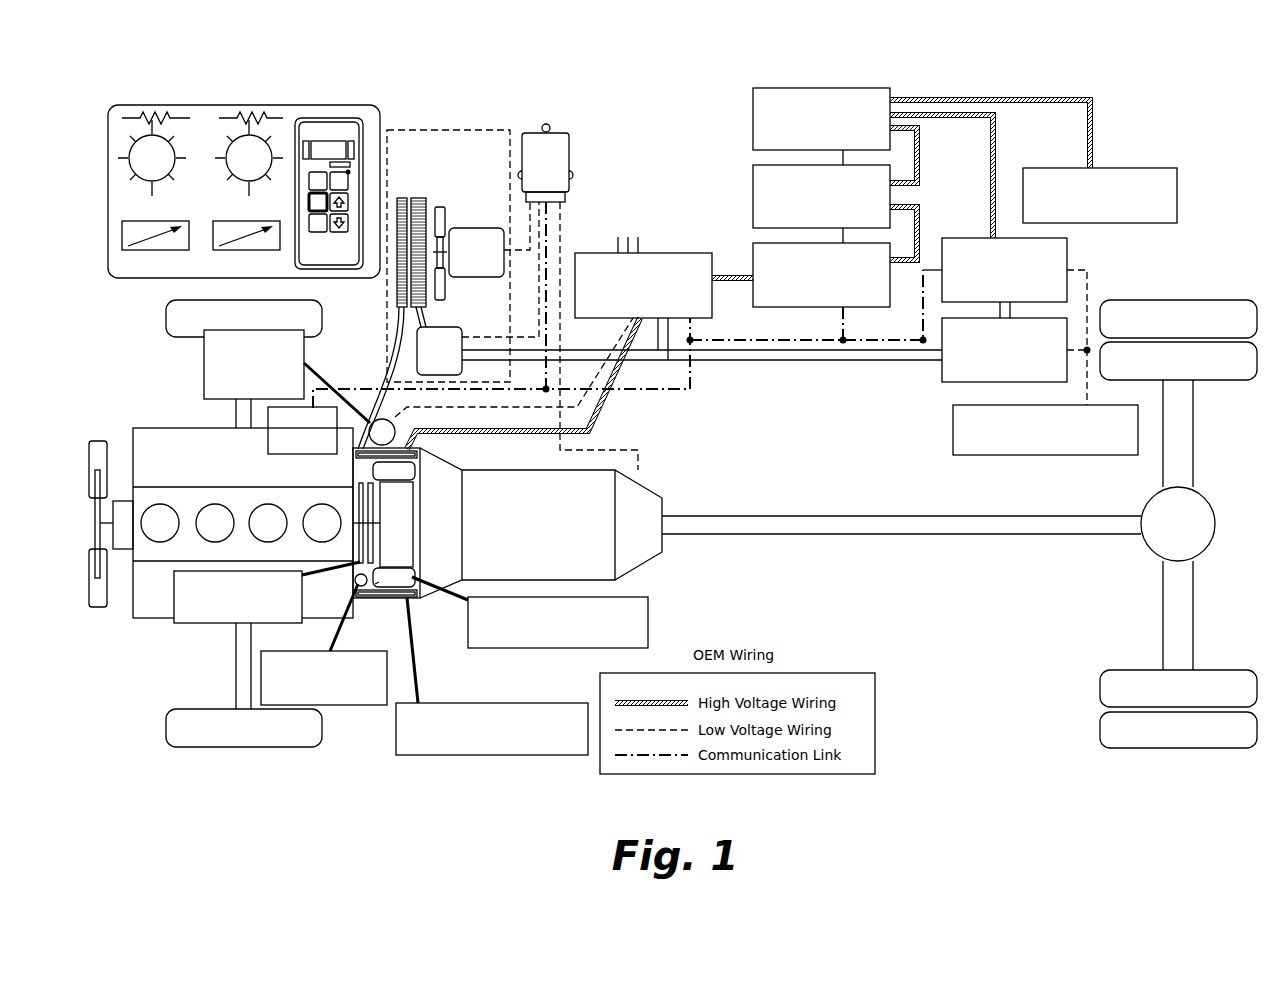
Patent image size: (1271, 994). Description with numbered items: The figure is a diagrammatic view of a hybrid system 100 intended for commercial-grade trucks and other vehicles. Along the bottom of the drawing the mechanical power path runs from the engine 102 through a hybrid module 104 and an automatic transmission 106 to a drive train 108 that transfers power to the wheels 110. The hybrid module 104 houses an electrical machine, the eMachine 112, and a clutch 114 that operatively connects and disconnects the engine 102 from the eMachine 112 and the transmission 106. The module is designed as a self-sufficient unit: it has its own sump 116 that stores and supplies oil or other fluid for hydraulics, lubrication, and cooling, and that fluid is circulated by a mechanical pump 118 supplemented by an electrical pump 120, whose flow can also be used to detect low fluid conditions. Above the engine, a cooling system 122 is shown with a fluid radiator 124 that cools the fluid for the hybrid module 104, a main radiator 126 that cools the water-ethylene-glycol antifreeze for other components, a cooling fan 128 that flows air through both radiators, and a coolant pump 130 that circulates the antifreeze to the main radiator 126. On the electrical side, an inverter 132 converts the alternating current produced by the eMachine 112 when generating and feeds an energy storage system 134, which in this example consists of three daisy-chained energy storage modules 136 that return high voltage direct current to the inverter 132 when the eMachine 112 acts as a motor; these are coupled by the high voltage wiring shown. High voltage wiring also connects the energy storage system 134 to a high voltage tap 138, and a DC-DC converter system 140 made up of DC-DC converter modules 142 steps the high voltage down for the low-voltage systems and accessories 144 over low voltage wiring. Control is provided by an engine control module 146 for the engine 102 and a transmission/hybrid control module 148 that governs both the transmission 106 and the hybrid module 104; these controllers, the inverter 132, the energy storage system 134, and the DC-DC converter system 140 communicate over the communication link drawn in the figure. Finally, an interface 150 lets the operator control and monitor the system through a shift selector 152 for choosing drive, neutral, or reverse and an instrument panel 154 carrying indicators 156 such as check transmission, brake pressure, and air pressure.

The hybrid system 100 is at (1142, 92).
The engine 102 is at (135, 428).
The hybrid module 104 is at (379, 584).
The automatic transmission 106 is at (656, 492).
The drive train 108 is at (923, 535).
The wheels 110 is at (1225, 300).
The eMachine 112 is at (414, 575).
The clutch 114 is at (355, 509).
The sump 116 is at (395, 600).
The mechanical pump 118 is at (352, 586).
The electrical pump 120 is at (374, 421).
The cooling system 122 is at (643, 259).
The fluid radiator 124 is at (397, 268).
The main radiator 126 is at (423, 203).
The cooling fan 128 is at (487, 228).
The coolant pump 130 is at (442, 327).
The inverter 132 is at (668, 253).
The energy storage system 134 is at (820, 180).
The energy storage modules 136 is at (859, 88).
The high voltage tap 138 is at (1177, 185).
The DC-DC converter system 140 is at (1017, 286).
The DC-DC converter modules 142 is at (972, 238).
The systems and accessories 144 is at (1053, 455).
The engine control module 146 is at (268, 427).
The transmission/hybrid control module 148 is at (527, 133).
The interface 150 is at (228, 155).
The shift selector 152 is at (324, 113).
The instrument panel 154 is at (121, 133).
The indicators 156 is at (143, 180).